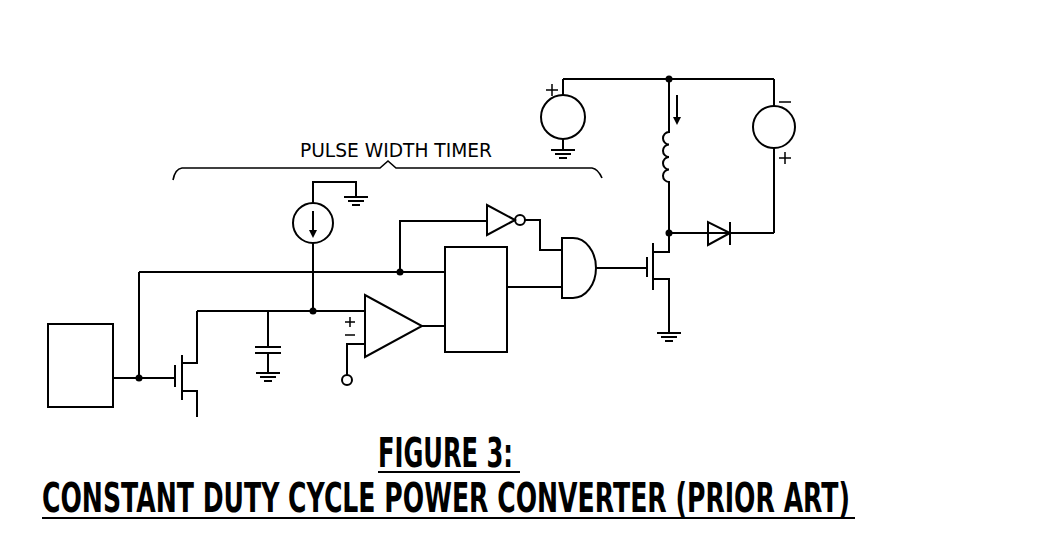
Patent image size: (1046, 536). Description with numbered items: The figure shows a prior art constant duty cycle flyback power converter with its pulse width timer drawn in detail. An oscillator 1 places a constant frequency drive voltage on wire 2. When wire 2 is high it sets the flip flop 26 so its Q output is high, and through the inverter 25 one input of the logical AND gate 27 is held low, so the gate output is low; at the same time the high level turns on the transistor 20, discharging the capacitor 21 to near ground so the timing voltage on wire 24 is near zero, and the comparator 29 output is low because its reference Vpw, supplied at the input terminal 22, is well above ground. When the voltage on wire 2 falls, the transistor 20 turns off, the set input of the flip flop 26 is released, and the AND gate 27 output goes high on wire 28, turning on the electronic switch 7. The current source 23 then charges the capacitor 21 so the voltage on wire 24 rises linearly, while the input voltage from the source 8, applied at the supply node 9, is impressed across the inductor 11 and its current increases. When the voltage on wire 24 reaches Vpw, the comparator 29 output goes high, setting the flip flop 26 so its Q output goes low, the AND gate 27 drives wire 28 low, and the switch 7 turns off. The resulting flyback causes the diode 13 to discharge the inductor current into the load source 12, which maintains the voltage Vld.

The oscillator 1 is at (78, 324).
The wire 2 is at (212, 272).
The electronic switch 7 is at (645, 285).
The source 8 is at (585, 107).
The input node 9 is at (685, 79).
The inductor 11 is at (672, 165).
The source 12 is at (752, 128).
The diode 13 is at (735, 238).
The transistor 20 is at (200, 393).
The capacitor 21 is at (283, 357).
The pulse width voltage input VPW 22 is at (342, 386).
The current source 23 is at (293, 212).
The wire 24 is at (313, 256).
The inverter 25 is at (490, 207).
The flip flop 26 is at (507, 331).
The logical AND gate 27 is at (585, 240).
The wire 28 is at (622, 265).
The comparator 29 is at (396, 347).